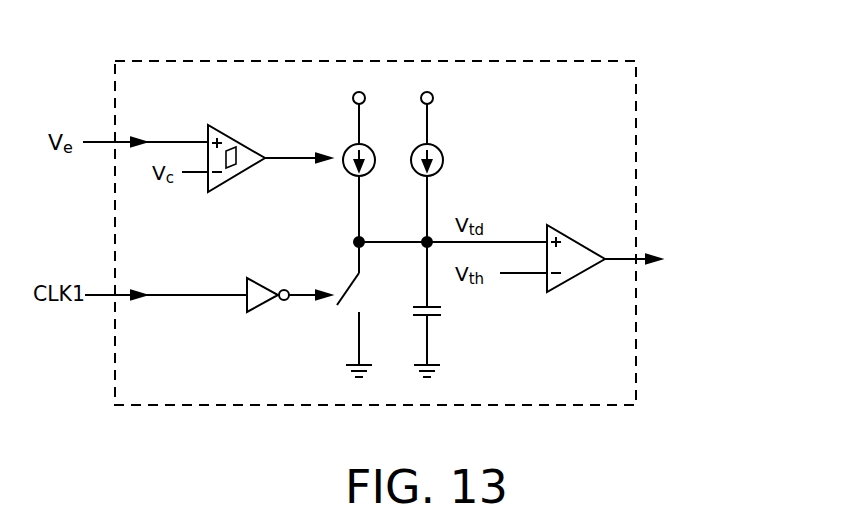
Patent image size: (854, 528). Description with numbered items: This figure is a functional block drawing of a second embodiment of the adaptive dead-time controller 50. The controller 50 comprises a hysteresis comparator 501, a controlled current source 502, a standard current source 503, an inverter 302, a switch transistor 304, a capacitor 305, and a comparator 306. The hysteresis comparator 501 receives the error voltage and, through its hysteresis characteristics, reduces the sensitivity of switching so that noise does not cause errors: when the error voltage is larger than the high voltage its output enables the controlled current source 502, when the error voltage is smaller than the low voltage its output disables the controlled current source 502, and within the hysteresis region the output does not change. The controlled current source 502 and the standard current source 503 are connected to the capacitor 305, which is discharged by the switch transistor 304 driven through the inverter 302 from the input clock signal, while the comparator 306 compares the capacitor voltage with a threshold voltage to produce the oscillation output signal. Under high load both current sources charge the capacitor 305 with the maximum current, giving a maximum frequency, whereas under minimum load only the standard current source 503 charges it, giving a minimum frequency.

The adaptive dead-time controller 50 is at (552, 60).
The hysteresis comparator 501 is at (246, 146).
The controlled current source 502 is at (366, 147).
The standard current source 503 is at (438, 147).
The inverter 302 is at (251, 312).
The switch transistor 304 is at (338, 309).
The capacitor 305 is at (446, 318).
The comparator 306 is at (582, 243).